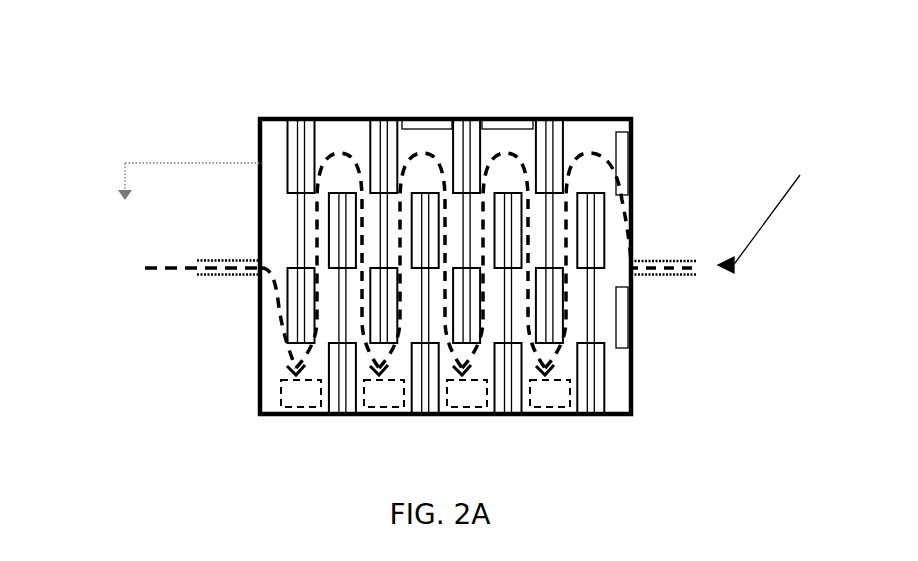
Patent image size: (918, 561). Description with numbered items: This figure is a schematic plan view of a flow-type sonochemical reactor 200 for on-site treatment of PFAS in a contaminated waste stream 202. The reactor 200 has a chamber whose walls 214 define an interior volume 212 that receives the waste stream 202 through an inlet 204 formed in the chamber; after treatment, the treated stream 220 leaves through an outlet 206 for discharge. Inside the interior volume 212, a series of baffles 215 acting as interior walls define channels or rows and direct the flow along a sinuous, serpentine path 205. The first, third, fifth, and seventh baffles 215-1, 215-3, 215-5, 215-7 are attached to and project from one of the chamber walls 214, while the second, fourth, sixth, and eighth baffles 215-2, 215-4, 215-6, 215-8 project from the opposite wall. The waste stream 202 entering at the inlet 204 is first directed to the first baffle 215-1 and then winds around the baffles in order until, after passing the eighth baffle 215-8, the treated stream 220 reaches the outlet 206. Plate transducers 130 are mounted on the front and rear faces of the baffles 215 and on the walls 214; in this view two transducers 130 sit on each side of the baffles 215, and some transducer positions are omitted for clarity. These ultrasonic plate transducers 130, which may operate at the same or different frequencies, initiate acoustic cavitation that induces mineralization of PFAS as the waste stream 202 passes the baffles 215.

The flow-type sonochemical reactor 200 is at (206, 71).
The waste stream 202 is at (140, 268).
The inlet 204 is at (216, 294).
The path 205 is at (273, 339).
The outlet 206 is at (672, 248).
The interior volume 212 is at (347, 126).
The walls 214 is at (267, 117).
The baffles 215 is at (563, 225).
The first baffle 215-1 is at (287, 118).
The second baffle 215-2 is at (340, 402).
The third baffle 215-3 is at (375, 120).
The fourth baffle 215-4 is at (422, 402).
The fifth baffle 215-5 is at (455, 120).
The sixth baffle 215-6 is at (505, 402).
The seventh baffle 215-7 is at (547, 120).
The eighth baffle 215-8 is at (588, 402).
The plate transducers 130 is at (428, 109).
The treated stream 220 is at (772, 211).